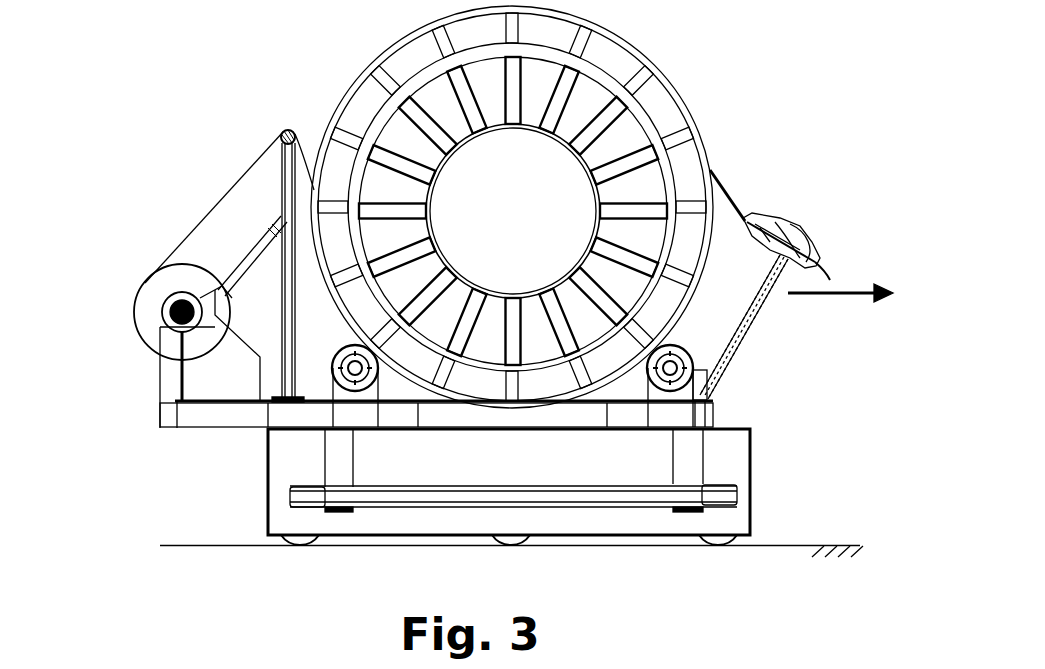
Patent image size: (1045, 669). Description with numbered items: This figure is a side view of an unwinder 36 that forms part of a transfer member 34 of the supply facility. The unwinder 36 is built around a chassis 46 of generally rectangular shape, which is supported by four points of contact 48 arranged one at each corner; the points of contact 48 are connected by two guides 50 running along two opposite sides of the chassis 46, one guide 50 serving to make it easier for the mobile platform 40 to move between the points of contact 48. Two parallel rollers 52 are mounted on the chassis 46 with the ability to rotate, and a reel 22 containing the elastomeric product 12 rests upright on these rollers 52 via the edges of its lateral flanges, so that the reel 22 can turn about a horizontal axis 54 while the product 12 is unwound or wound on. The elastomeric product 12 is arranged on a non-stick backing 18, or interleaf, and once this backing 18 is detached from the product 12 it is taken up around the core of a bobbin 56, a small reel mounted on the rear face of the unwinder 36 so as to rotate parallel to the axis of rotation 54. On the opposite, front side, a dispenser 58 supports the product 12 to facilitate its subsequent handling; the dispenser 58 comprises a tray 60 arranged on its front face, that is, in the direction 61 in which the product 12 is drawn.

The transfer member 34 is at (110, 112).
The non-stick backing 18 is at (220, 202).
The bobbin 56 is at (133, 310).
The chassis 46 is at (210, 418).
The rollers 52 is at (333, 360).
The points of contact 48 is at (335, 465).
The mobile platform 40 is at (275, 517).
The reel 22 is at (687, 110).
The horizontal axis 54 is at (515, 208).
The elastomeric product 12 is at (735, 213).
The dispenser 58 is at (793, 203).
The tray 60 is at (800, 227).
The direction in which the product is drawn 61 is at (847, 292).
The unwinder 36 is at (826, 361).
The guides 50 is at (730, 500).